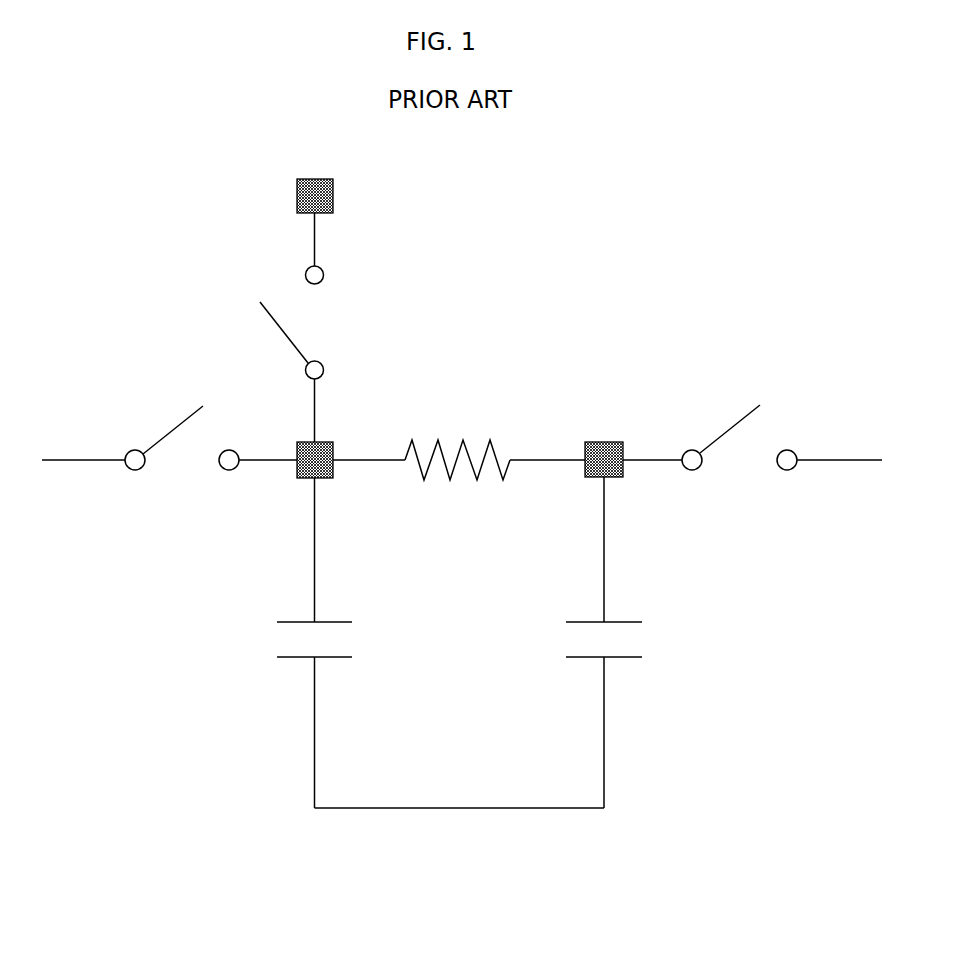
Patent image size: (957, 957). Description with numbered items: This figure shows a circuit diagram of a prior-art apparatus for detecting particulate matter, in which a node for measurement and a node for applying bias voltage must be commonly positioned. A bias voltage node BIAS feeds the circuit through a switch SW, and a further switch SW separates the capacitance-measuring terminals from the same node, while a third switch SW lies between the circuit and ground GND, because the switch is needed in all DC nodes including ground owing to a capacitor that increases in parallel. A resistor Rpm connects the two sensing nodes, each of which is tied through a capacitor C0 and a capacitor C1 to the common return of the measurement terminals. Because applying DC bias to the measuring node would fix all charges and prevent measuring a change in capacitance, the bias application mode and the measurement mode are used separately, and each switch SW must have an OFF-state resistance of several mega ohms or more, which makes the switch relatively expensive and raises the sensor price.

The switch SW is at (462, 385).
The bias voltage node BIAS is at (67, 432).
The ground GND is at (856, 435).
The resistor Rpm is at (459, 482).
The capacitor C0 is at (322, 643).
The capacitor C1 is at (610, 642).